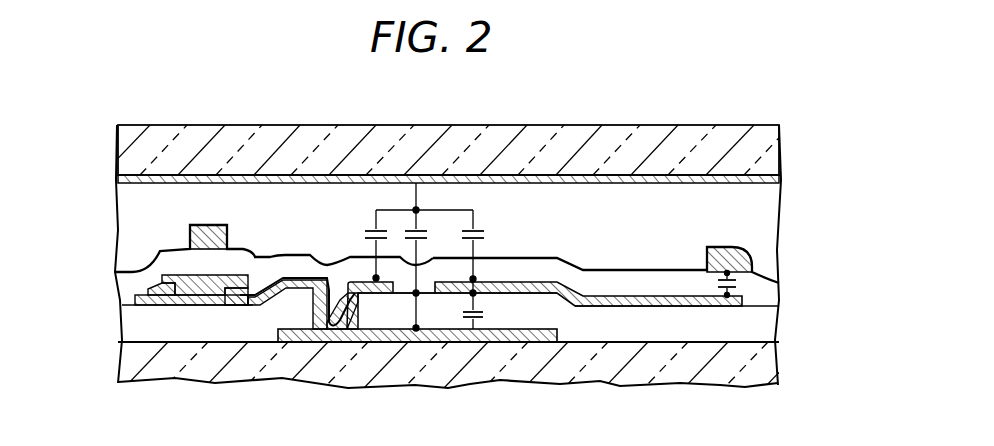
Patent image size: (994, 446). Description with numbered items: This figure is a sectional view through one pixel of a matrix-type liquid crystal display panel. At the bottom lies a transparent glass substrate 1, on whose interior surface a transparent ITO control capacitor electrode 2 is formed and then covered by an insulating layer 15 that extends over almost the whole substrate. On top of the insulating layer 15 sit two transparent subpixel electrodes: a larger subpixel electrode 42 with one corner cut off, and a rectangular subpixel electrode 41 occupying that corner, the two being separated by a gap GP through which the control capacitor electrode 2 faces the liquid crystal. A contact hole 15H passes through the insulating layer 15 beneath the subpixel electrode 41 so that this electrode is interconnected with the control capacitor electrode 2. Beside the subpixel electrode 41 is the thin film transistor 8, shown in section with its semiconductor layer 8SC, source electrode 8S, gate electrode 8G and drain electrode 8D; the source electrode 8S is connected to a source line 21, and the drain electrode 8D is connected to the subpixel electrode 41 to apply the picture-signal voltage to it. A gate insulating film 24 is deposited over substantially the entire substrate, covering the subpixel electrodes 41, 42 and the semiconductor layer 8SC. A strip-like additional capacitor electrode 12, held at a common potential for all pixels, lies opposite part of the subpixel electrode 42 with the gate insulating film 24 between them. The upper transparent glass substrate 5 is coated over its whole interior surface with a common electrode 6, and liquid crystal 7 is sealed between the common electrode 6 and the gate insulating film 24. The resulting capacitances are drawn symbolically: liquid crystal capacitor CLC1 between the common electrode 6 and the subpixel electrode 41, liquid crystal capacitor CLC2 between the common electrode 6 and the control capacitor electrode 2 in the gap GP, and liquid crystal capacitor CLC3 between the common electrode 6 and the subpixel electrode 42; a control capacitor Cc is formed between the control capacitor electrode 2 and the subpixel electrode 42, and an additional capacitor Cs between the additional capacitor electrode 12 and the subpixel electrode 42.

The transparent substrate 1 is at (770, 366).
The control capacitor electrode 2 is at (302, 336).
The transparent substrate 5 is at (770, 155).
The common electrode 6 is at (781, 181).
The liquid crystal 7 is at (769, 236).
The thin film transistor 8 is at (174, 260).
The gate electrode 8G is at (207, 224).
The source electrode 8S is at (178, 299).
The semiconductor layer 8SC is at (210, 297).
The drain electrode 8D is at (248, 298).
The additional capacitor electrode 12 is at (733, 246).
The insulating layer 15 is at (770, 326).
The contact hole 15H is at (331, 306).
The source line 21 is at (147, 283).
The gate insulating film 24 is at (770, 297).
The subpixel electrode 41 is at (283, 257).
The subpixel electrode 42 is at (596, 298).
The gap GP is at (403, 284).
The liquid crystal capacitor CLC1 is at (345, 245).
The liquid crystal capacitor CLC2 is at (432, 232).
The liquid crystal capacitor CLC3 is at (498, 251).
The control capacitor Cc is at (465, 310).
The additional capacitor Cs is at (716, 280).